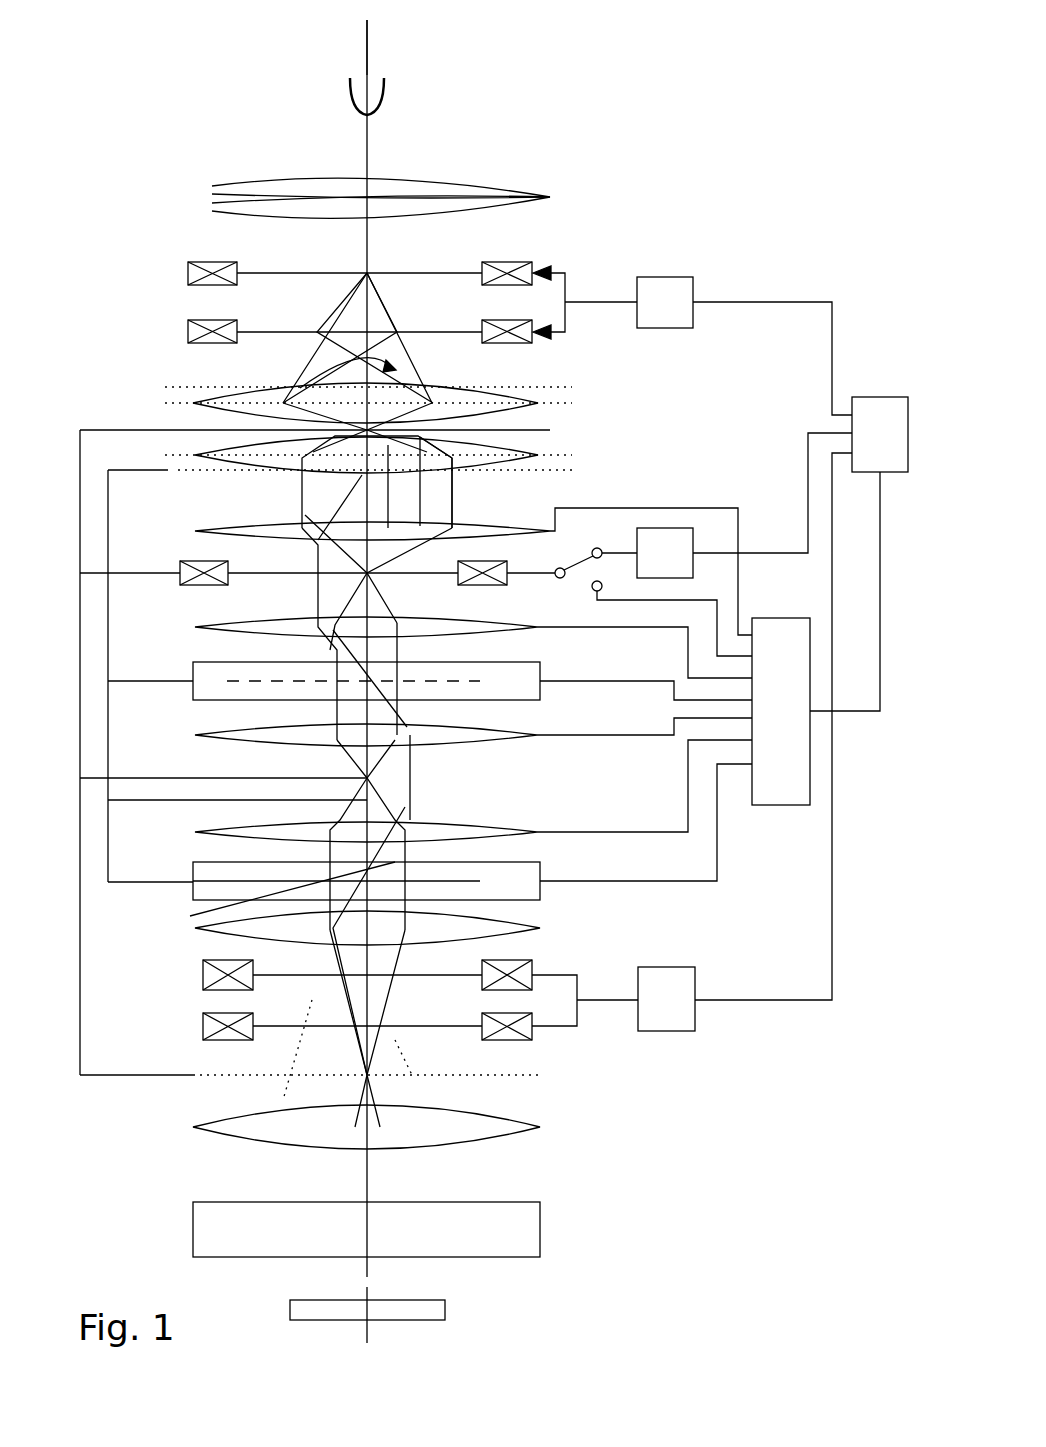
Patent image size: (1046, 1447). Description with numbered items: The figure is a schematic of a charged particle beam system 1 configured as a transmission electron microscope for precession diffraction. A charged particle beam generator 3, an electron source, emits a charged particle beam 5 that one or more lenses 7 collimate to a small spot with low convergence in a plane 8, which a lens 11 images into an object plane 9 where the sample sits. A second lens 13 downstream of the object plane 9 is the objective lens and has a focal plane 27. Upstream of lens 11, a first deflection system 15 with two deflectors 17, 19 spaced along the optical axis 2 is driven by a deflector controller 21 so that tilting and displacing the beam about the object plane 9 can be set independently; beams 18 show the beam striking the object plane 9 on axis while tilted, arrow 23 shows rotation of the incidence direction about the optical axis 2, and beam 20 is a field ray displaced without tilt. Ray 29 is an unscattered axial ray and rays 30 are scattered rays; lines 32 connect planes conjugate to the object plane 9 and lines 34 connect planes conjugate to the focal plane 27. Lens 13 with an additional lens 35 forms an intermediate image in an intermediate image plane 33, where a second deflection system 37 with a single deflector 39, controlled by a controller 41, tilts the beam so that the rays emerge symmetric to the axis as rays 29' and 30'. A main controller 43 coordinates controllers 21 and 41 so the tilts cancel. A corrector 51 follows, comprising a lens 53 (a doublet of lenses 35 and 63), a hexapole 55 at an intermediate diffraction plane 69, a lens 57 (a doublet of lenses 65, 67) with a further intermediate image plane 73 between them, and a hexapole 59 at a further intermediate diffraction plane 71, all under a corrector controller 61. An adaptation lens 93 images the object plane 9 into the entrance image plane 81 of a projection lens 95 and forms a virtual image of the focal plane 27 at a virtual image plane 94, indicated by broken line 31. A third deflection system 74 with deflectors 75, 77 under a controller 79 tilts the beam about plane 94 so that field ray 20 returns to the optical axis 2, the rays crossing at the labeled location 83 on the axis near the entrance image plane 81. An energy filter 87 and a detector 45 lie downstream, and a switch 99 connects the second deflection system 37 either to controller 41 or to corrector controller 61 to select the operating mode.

The charged particle beam system 1 is at (720, 95).
The optical axis 2 is at (370, 36).
The charged particle beam generator 3 is at (350, 100).
The charged particle beam 5 is at (370, 145).
The lens 7 is at (540, 198).
The plane 8 is at (258, 272).
The object plane 9 is at (145, 427).
The lens 11 is at (527, 392).
The second lens 13 is at (540, 448).
The first deflection system 15 is at (387, 286).
The deflector 17 is at (205, 262).
The beams 18 is at (302, 345).
The deflector 19 is at (233, 343).
The beam 20 is at (330, 312).
The deflector controller 21 is at (653, 316).
The arrow 23 is at (398, 333).
The focal plane 27 is at (127, 472).
The charged particle ray 29 is at (349, 482).
The ray 29' is at (458, 467).
The charged particle rays 30 is at (409, 562).
The scattered rays 30' is at (393, 701).
The broken line 31 is at (192, 916).
The lines 32 is at (85, 968).
The intermediate image plane 33 is at (125, 578).
The lines 34 is at (113, 660).
The additional lens 35 is at (515, 527).
The second deflection system 37 is at (187, 535).
The deflector 39 is at (228, 585).
The controller 41 is at (653, 567).
The main controller 43 is at (868, 449).
The detector 45 is at (447, 1310).
The corrector 51 is at (62, 430).
The lens 53 is at (344, 580).
The hexapole 55 is at (545, 668).
The lens 57 is at (451, 780).
The hexapole 59 is at (545, 868).
The corrector controller 61 is at (769, 726).
The lens 63 is at (537, 620).
The lens 65 is at (465, 742).
The lens 67 is at (528, 828).
The intermediate diffraction plane 69 is at (152, 688).
The further intermediate diffraction plane 71 is at (127, 884).
The further intermediate image plane 73 is at (135, 775).
The third deflection system 74 is at (394, 1002).
The deflector 75 is at (535, 975).
The deflector 77 is at (535, 1035).
The controller 79 is at (654, 1013).
The entrance image plane 81 is at (117, 1073).
The crossover 83 is at (365, 1074).
The energy filter 87 is at (542, 1228).
The adaptation lens 93 is at (540, 925).
The virtual image plane 94 is at (133, 808).
The projection lens 95 is at (540, 1124).
The switch 99 is at (580, 538).